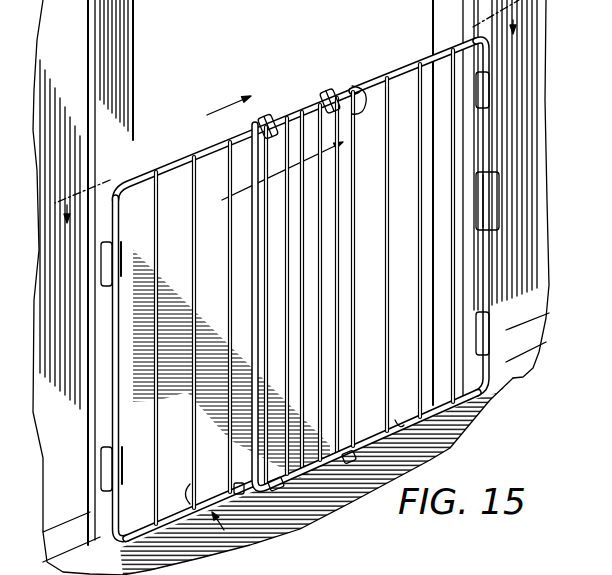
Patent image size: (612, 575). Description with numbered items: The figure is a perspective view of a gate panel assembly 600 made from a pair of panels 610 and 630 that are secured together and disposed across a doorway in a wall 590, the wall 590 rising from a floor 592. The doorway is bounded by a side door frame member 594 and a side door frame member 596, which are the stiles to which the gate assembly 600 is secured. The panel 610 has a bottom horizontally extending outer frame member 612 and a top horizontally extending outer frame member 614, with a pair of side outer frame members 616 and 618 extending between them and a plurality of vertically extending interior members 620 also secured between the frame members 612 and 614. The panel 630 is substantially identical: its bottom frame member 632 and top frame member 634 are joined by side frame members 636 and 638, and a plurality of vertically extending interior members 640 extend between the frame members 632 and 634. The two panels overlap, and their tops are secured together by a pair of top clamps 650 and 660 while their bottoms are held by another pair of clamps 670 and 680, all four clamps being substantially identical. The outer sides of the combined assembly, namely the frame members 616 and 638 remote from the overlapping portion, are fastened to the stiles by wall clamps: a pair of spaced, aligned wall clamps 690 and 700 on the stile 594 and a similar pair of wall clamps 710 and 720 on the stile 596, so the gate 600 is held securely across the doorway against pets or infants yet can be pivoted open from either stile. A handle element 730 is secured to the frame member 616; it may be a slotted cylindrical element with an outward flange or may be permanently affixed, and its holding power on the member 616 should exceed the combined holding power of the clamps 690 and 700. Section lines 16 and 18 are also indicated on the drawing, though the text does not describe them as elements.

The section line 16- 16 is at (263, 154).
The section line 18- 18 is at (286, 111).
The wall 590 is at (533, 13).
The floor 592 is at (513, 380).
The side door frame member 594 is at (463, 9).
The side door frame member 596 is at (127, 40).
The gate panel assembly 600 is at (233, 296).
The panel 610 is at (413, 244).
The bottom horizontally extending outer frame member 612 is at (443, 403).
The top horizontally extending outer frame member 614 is at (378, 79).
The side outer frame member 616 is at (490, 137).
The side outer frame member 618 is at (240, 494).
The interior members 620 is at (402, 420).
The panel 630 is at (232, 530).
The bottom horizontally extending frame member 632 is at (147, 531).
The top horizontally extending frame member 634 is at (177, 156).
The side frame member 636 is at (361, 87).
The side frame member 638 is at (113, 540).
The interior members 640 is at (187, 487).
The top clamp 650 is at (268, 116).
The top clamp 660 is at (320, 92).
The clamp 670 is at (284, 490).
The clamp 680 is at (347, 460).
The wall clamp 690 is at (490, 318).
The wall clamp 700 is at (490, 88).
The wall clamp 710 is at (103, 485).
The wall clamp 720 is at (101, 262).
The handle element 730 is at (500, 215).